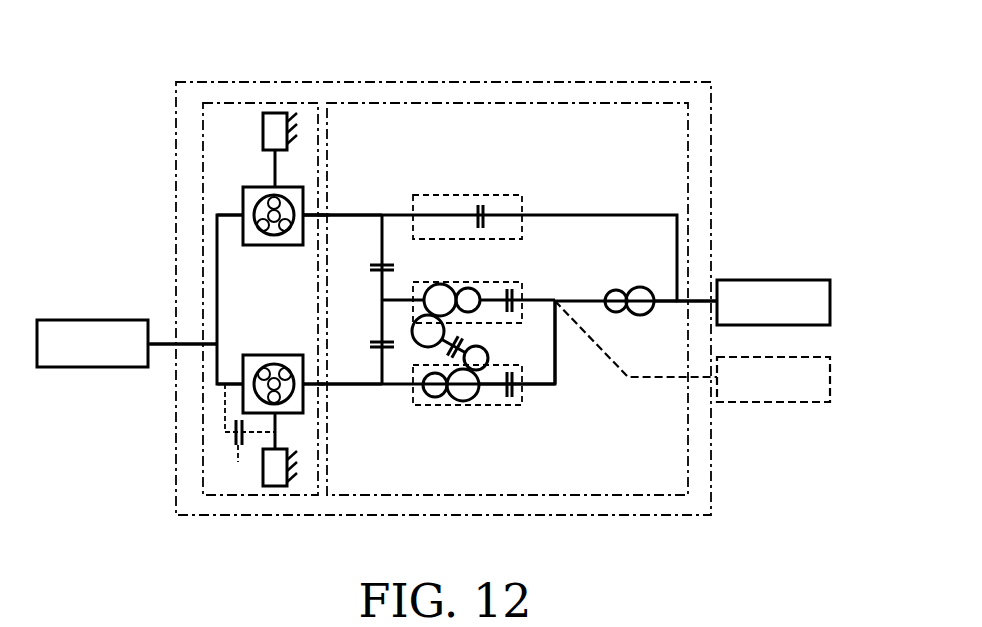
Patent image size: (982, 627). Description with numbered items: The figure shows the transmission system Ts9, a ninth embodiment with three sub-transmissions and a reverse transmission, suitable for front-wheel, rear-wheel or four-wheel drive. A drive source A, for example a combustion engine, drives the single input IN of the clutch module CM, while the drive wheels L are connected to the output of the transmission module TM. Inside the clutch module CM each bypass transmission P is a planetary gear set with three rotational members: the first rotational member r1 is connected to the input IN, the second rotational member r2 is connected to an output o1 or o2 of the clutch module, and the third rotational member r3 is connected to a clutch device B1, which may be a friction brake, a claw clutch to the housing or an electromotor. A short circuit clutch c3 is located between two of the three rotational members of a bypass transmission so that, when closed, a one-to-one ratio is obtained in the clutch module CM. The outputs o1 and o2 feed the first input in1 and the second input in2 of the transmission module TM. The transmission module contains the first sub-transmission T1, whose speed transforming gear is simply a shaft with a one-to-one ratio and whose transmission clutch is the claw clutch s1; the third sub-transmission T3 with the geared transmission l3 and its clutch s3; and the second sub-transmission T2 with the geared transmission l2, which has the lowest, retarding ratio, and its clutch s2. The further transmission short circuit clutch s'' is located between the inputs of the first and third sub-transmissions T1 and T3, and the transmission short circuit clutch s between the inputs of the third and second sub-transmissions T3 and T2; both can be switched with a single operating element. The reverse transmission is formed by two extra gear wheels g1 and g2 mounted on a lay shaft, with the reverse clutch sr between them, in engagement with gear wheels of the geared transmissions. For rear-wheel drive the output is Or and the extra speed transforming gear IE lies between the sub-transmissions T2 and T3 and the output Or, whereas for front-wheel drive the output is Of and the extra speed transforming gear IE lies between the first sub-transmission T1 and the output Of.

The transmission system Ts9 is at (176, 82).
The clutch module CM is at (222, 103).
The transmission module TM is at (535, 103).
The first clutch device B1 is at (275, 113).
The bypass transmission P is at (248, 210).
The first rotational member r1 is at (250, 245).
The second rotational member r2 is at (303, 253).
The third rotational member r3 is at (277, 187).
The first output o1 is at (310, 245).
The second output o2 is at (317, 380).
The first input in1 is at (327, 213).
The second input in2 is at (328, 384).
The further transmission short circuit clutch s'' is at (363, 266).
The transmission short circuit clutch s is at (363, 342).
The reverse clutch sr is at (448, 350).
The transmission clutch s1 is at (481, 205).
The transmission clutch s2 is at (509, 405).
The third synchronizer s3 is at (509, 289).
The first sub-transmission T1 is at (522, 195).
The second sub-transmission T2 is at (522, 405).
The third sub-transmission T3 is at (522, 282).
The second geared transmission l2 is at (447, 398).
The third geared transmission l3 is at (458, 290).
The extra gear wheel g1 is at (420, 333).
The extra gear wheel g2 is at (483, 354).
The short circuit clutch c3 is at (250, 432).
The extra speed transforming gear IE is at (628, 290).
The rear wheel drive output Or is at (687, 301).
The front wheel drive output Of is at (555, 301).
The drive wheels L is at (781, 302).
The drive source A is at (93, 345).
The input IN is at (202, 344).